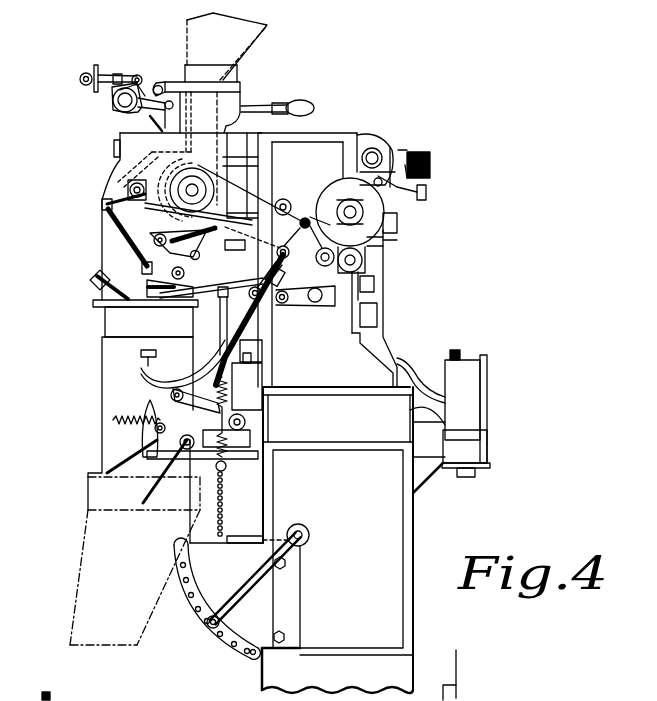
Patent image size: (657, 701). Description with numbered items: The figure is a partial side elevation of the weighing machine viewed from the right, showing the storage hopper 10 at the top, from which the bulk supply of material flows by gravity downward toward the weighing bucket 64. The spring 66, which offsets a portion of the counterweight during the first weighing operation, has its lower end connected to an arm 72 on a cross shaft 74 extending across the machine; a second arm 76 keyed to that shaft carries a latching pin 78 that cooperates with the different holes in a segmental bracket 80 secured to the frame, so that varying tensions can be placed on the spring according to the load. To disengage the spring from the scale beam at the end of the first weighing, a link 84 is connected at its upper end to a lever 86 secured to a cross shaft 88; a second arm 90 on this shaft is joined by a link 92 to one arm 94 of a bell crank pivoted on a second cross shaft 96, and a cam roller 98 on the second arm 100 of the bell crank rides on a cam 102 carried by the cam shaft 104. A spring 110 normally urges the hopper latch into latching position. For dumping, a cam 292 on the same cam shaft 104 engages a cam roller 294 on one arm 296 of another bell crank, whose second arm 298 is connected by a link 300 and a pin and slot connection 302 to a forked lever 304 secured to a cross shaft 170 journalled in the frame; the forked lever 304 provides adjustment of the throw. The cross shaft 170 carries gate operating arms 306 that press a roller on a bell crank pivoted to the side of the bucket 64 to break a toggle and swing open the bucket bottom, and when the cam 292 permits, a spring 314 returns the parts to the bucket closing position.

The storage hopper 10 is at (187, 42).
The cam roller 294 is at (303, 218).
The cam roller 98 is at (327, 200).
The arm of bell crank 94 is at (302, 217).
The cam shaft 104 is at (364, 209).
The cam 102 is at (384, 216).
The cam 292 is at (385, 236).
The second arm of bell crank 100 is at (368, 248).
The arm of bell crank 296 is at (362, 265).
The second cross shaft 96 is at (376, 284).
The second arm of bell crank 298 is at (384, 318).
The cross shaft 88 is at (263, 278).
The link 84 is at (185, 318).
The spring 110 is at (137, 313).
The second arm 90 is at (283, 303).
The link 92 is at (300, 263).
The lever 86 is at (250, 326).
The link 300 is at (250, 347).
The weighing bucket 64 is at (102, 362).
The pin and slot connection 302 is at (197, 403).
The spring 66 is at (232, 393).
The cross shaft 170 is at (243, 420).
The spring 314 is at (125, 425).
The gate operating arm 306 is at (160, 477).
The forked lever 304 is at (205, 450).
The arm 72 is at (242, 534).
The cross shaft 74 is at (310, 527).
The second arm 76 is at (263, 590).
The latching pin 78 is at (208, 635).
The segmental bracket 80 is at (240, 655).